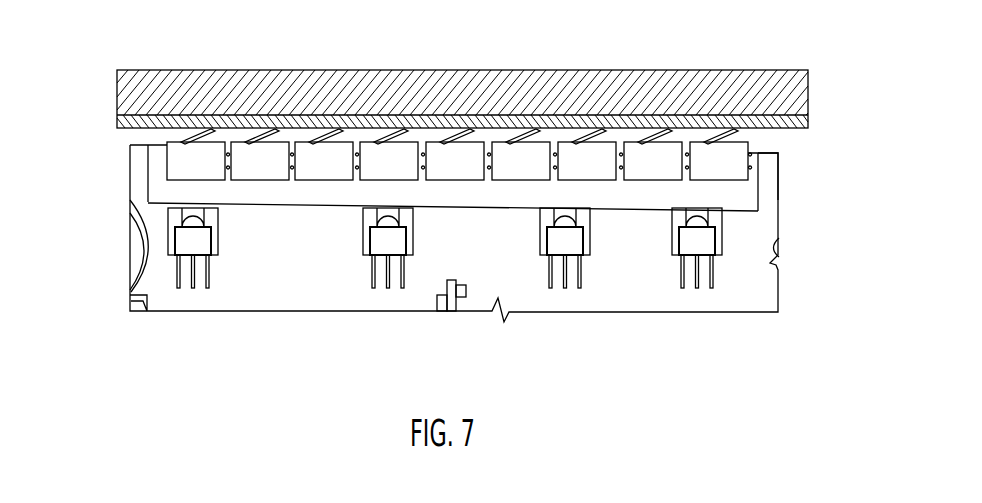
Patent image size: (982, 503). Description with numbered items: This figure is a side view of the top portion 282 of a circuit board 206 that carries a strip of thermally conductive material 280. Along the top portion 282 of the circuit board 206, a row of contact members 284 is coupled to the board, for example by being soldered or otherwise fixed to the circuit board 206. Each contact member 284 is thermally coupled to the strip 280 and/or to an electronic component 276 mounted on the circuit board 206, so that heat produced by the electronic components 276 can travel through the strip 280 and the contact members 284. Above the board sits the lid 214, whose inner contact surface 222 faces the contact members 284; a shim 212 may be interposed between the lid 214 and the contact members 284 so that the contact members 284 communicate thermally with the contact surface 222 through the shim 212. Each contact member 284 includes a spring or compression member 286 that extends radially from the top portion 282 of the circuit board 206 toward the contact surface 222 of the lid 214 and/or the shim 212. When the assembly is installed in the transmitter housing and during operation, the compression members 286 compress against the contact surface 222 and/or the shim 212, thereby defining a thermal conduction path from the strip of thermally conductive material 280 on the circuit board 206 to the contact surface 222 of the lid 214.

The circuit board 206 is at (209, 313).
The shim 212 is at (307, 117).
The lid 214 is at (485, 78).
The contact surface 222 is at (808, 117).
The electronic component 276 is at (186, 240).
The strip of thermally conductive material 280 is at (153, 153).
The top portion 282 is at (766, 178).
The contact member 284 is at (247, 157).
The compression member 286 is at (535, 130).